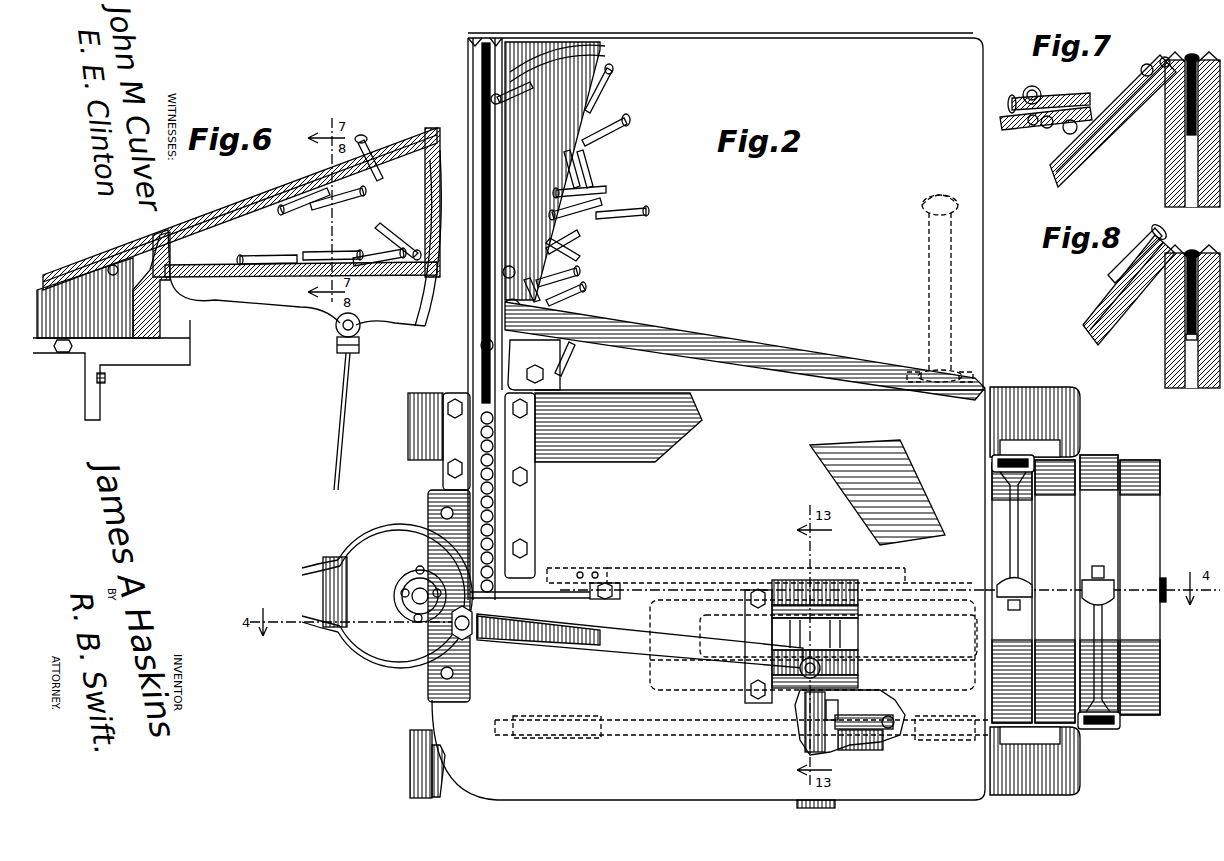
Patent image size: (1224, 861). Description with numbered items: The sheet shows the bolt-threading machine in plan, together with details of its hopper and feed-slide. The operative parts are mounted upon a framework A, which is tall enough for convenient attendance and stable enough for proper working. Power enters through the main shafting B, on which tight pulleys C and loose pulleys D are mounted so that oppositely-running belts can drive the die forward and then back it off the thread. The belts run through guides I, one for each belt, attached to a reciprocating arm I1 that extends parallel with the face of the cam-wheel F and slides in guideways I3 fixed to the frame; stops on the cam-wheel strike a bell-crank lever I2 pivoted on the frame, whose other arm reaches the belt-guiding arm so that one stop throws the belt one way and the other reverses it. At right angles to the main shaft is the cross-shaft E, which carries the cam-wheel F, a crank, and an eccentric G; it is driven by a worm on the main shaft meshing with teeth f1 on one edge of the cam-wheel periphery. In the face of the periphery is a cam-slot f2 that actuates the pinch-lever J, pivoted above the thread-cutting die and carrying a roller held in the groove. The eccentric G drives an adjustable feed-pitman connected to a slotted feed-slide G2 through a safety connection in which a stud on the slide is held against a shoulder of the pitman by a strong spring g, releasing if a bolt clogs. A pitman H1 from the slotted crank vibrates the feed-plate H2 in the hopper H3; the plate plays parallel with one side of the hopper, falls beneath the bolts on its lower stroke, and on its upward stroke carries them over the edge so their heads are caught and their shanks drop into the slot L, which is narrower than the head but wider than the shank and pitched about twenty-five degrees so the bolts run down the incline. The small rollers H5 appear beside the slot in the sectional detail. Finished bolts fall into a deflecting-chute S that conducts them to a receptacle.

In FIG. 6, the slot L is at (228, 210).
In FIG. 2, the slot L is at (480, 365).
In FIG. 7, the slot L is at (1192, 140).
In FIG. 8, the slot L is at (1192, 325).
In FIG. 6, the vibrating feed-plate H2 is at (297, 230).
In FIG. 2, the vibrating feed-plate H2 is at (738, 221).
In FIG. 7, the vibrating feed-plate H2 is at (1100, 140).
In FIG. 8, the vibrating feed-plate H2 is at (1112, 318).
In FIG. 6, the hopper H3 is at (438, 172).
In FIG. 2, the hopper H3 is at (725, 211).
In FIG. 6, the pitman H1 is at (338, 430).
In FIG. 7, the rollers H5 is at (1082, 95).
In FIG. 2, the framework A is at (696, 599).
In FIG. 2, the spring g is at (565, 572).
In FIG. 2, the eccentric G is at (903, 572).
In FIG. 2, the slotted feed-slide G2 is at (540, 605).
In FIG. 2, the pinch-lever J is at (640, 641).
In FIG. 2, the deflecting-chute S is at (387, 596).
In FIG. 2, the cam-wheel F is at (801, 646).
In FIG. 2, the teeth f1 is at (858, 595).
In FIG. 2, the cam-slot f2 is at (858, 655).
In FIG. 2, the cross-shaft E is at (812, 725).
In FIG. 2, the guides I is at (990, 462).
In FIG. 2, the reciprocating arm I1 is at (742, 723).
In FIG. 2, the bell-crank lever I2 is at (866, 740).
In FIG. 2, the guideways I3 is at (548, 733).
In FIG. 2, the tight pulleys C is at (1076, 591).
In FIG. 2, the loose pulleys D is at (1076, 589).
In FIG. 2, the main shafting B is at (1163, 590).